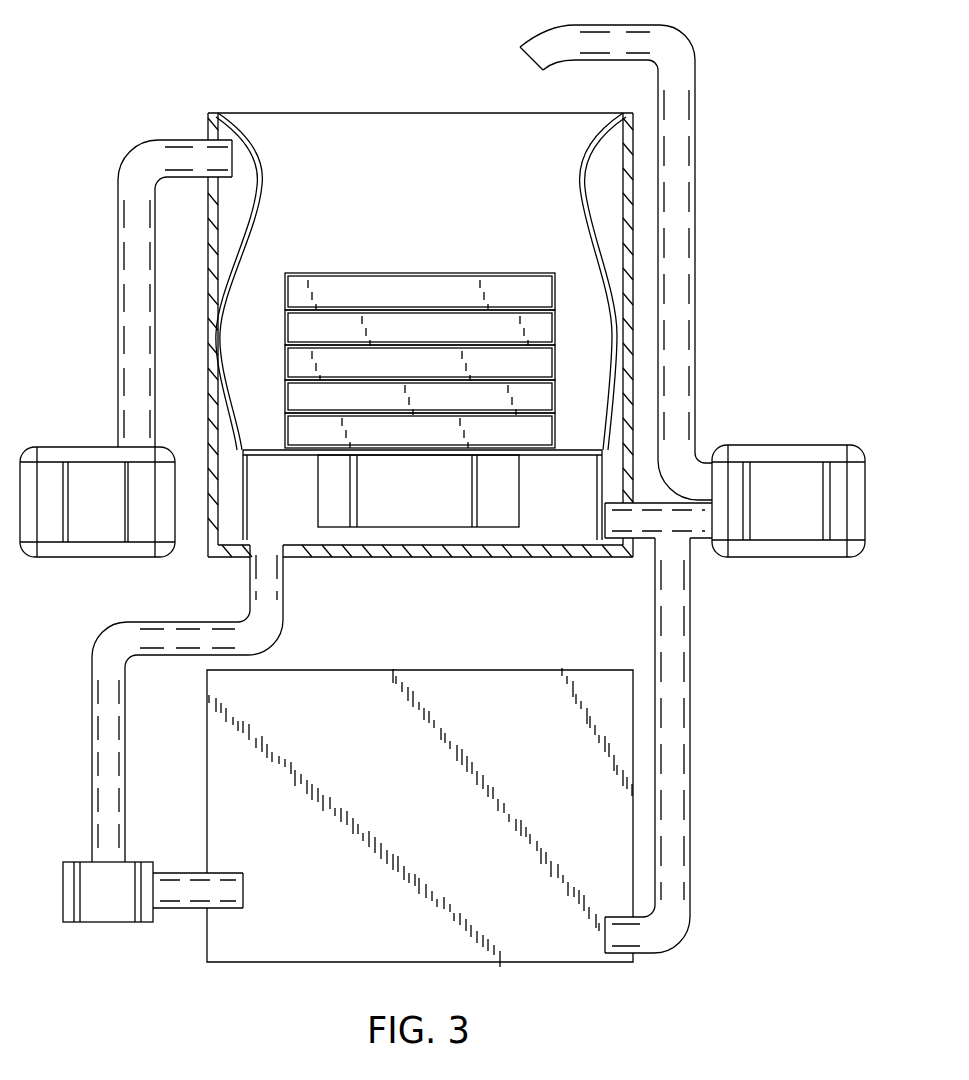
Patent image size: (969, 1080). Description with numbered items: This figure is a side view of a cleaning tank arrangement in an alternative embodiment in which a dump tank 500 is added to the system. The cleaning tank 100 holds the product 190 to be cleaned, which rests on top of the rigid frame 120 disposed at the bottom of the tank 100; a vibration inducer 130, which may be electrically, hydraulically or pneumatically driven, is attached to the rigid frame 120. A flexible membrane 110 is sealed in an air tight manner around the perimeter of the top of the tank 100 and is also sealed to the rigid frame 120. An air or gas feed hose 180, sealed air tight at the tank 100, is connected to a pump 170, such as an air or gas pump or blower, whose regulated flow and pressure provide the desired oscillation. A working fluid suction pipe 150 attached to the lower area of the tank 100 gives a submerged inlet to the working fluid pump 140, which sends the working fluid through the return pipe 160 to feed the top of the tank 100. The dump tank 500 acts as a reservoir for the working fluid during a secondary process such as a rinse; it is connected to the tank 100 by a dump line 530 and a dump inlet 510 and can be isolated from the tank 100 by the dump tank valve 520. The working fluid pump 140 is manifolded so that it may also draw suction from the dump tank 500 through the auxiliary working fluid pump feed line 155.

The tank 100 is at (210, 128).
The membrane 110 is at (250, 233).
The rigid frame 120 is at (288, 453).
The vibration inducer 130 is at (477, 527).
The working fluid pump 140 is at (808, 557).
The working fluid suction pipe 150 is at (697, 542).
The auxiliary working fluid pump feed line 155 is at (690, 745).
The return pipe 160 is at (695, 245).
The pump 170 is at (66, 447).
The air or gas feed hose 180 is at (120, 257).
The product 190 is at (352, 273).
The dump tank 500 is at (310, 913).
The dump inlet 510 is at (185, 908).
The dump tank valve 520 is at (80, 922).
The dump line 530 is at (92, 742).